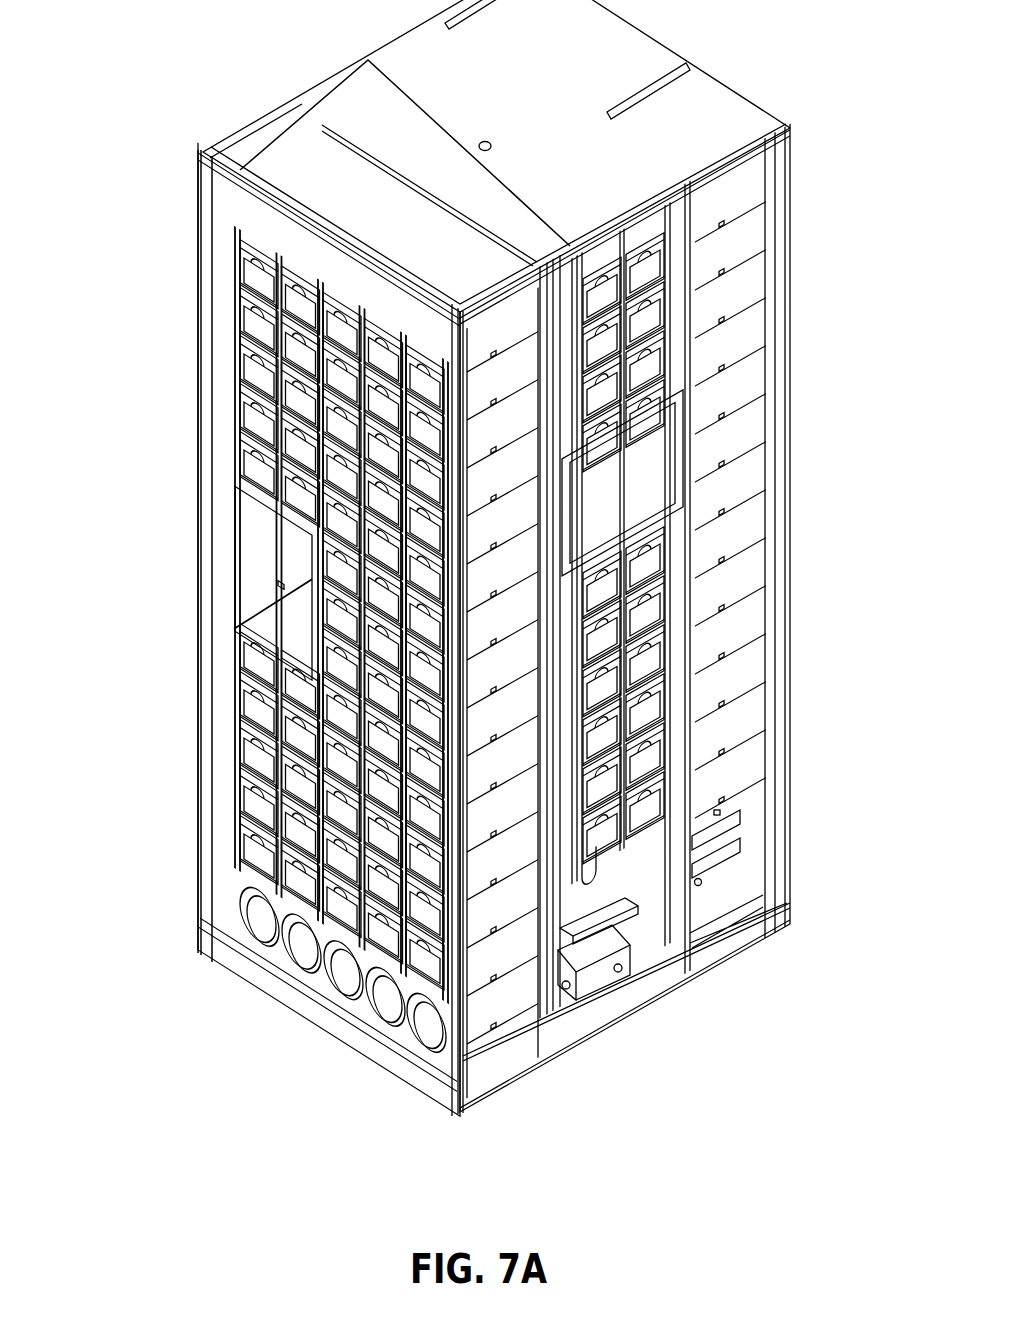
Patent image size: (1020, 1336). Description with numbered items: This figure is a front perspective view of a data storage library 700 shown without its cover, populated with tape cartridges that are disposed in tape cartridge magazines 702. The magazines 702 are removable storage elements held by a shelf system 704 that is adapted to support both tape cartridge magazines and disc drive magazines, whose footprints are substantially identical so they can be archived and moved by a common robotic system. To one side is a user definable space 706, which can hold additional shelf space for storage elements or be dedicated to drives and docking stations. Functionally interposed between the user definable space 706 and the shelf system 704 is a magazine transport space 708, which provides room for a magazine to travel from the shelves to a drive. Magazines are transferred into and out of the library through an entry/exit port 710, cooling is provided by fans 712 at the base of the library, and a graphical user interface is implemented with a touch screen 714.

The data storage library 700 is at (239, 54).
The tape cartridge magazines 702 is at (224, 294).
The shelf system 704 is at (163, 698).
The user definable space 706 is at (742, 202).
The magazine transport space 708 is at (646, 956).
The entry/exit port 710 is at (250, 576).
The fans 712 is at (239, 992).
The touch screen 714 is at (658, 482).